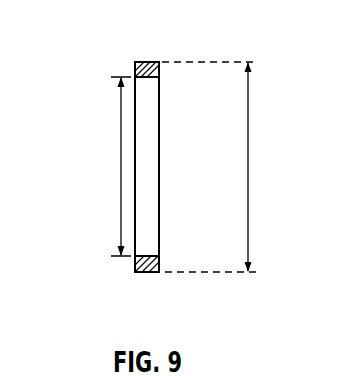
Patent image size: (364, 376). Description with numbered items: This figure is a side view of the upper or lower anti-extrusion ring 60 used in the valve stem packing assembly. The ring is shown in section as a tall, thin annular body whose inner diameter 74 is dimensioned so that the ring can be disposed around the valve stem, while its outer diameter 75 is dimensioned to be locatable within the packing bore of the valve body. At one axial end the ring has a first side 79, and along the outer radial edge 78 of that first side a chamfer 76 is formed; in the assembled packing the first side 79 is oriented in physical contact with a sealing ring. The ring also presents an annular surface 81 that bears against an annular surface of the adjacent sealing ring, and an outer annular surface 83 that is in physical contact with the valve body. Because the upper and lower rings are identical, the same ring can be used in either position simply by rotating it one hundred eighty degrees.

The anti-extrusion ring 60 is at (95, 64).
The inner diameter 74 is at (121, 165).
The outer diameter 75 is at (249, 165).
The chamfer 76 is at (161, 274).
The outer radial edge 78 is at (146, 62).
The first side 79 is at (158, 63).
The annular surface 81 is at (160, 261).
The outer annular surface 83 is at (135, 258).